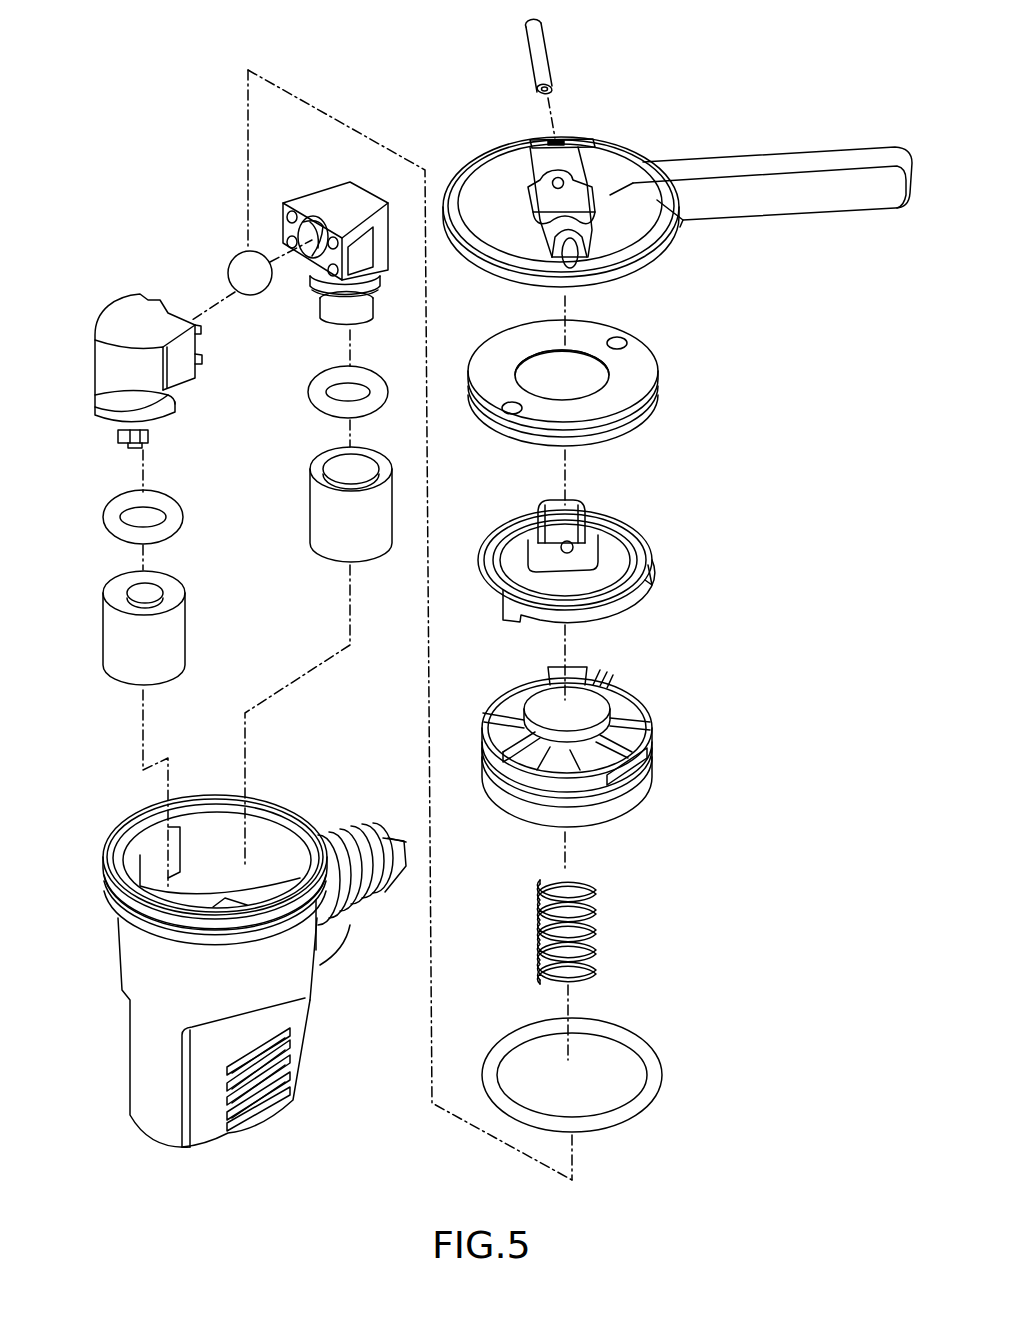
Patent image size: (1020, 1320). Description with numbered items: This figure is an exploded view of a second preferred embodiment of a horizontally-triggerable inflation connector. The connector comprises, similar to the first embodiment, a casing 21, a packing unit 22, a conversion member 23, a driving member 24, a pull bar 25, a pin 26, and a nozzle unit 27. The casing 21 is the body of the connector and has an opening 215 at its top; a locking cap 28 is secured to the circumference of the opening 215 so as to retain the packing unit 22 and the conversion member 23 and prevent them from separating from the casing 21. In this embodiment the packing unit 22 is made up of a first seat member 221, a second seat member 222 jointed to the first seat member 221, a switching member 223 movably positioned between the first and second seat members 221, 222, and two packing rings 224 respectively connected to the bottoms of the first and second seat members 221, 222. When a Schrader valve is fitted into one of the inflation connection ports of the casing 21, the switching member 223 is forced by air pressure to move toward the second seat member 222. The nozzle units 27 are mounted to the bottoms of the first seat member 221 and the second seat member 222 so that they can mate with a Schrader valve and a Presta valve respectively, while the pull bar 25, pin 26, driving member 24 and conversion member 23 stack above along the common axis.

The casing 21 is at (254, 941).
The opening 215 is at (283, 823).
The packing unit 22 is at (197, 242).
The first seat member 221 is at (120, 323).
The second seat member 222 is at (308, 202).
The switching member 223 is at (253, 294).
The packing rings 224 is at (173, 635).
The conversion member 23 is at (653, 737).
The driving member 24 is at (648, 577).
The pull bar 25 is at (793, 160).
The pin 26 is at (544, 47).
The nozzle unit 27 is at (150, 432).
The locking cap 28 is at (628, 377).